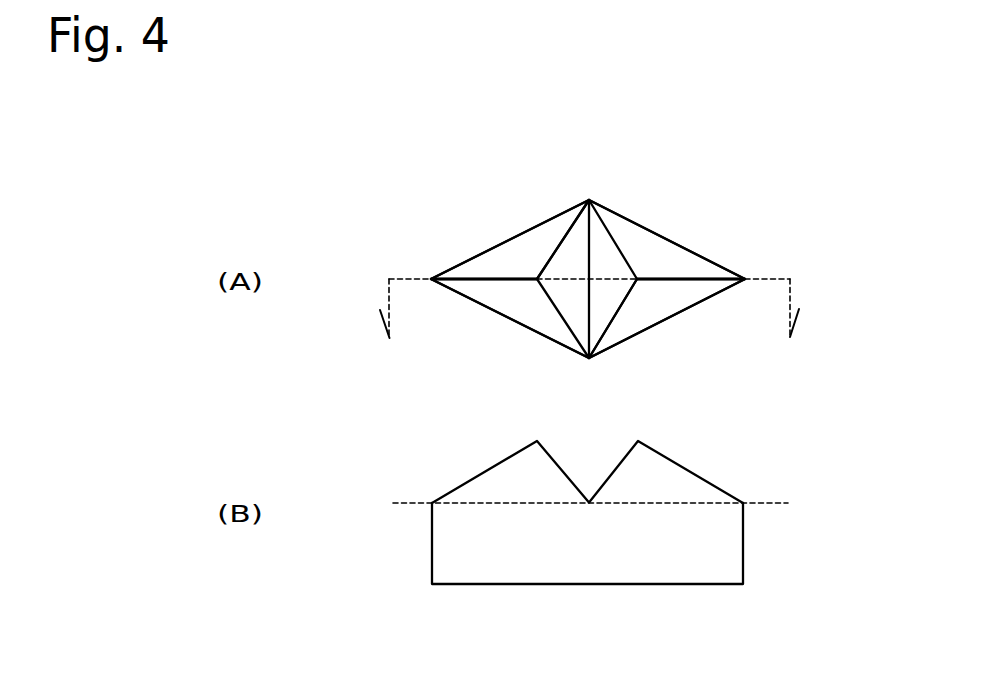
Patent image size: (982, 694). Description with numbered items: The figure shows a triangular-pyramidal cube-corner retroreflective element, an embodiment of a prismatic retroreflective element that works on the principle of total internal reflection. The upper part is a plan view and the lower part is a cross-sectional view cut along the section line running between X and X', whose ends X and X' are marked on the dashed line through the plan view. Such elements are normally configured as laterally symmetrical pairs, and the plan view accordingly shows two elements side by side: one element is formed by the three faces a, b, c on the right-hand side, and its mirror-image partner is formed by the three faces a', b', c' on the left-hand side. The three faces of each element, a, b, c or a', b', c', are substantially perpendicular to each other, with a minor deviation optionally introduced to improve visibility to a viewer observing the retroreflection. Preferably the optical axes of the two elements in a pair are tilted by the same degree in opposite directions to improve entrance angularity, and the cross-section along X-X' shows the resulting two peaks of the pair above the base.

The face a is at (667, 239).
The face b is at (667, 318).
The face c is at (613, 318).
The face a' is at (510, 318).
The face b' is at (510, 239).
The face c' is at (563, 239).
The section line end X is at (809, 303).
The section line end X' is at (368, 304).